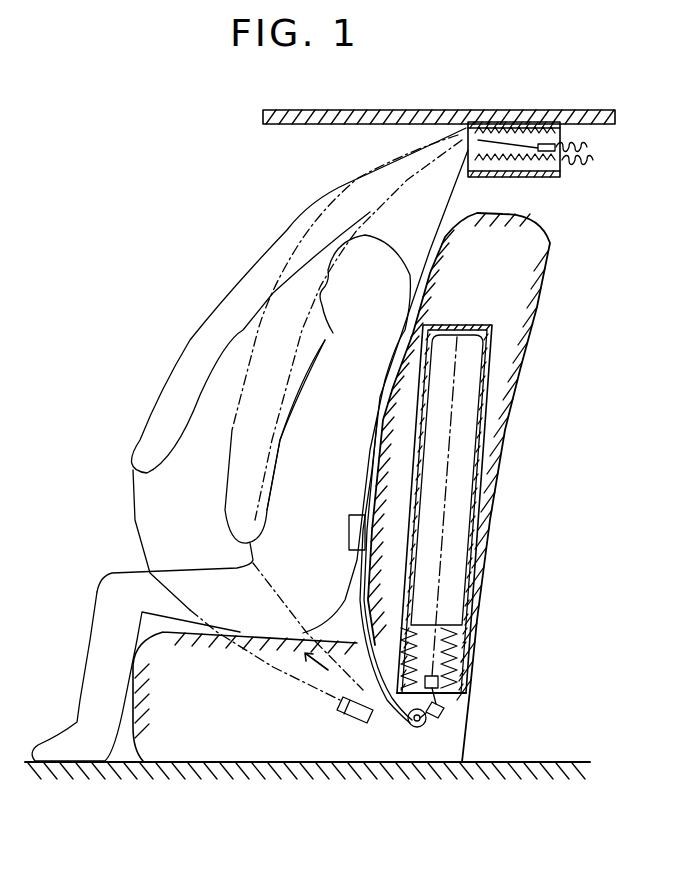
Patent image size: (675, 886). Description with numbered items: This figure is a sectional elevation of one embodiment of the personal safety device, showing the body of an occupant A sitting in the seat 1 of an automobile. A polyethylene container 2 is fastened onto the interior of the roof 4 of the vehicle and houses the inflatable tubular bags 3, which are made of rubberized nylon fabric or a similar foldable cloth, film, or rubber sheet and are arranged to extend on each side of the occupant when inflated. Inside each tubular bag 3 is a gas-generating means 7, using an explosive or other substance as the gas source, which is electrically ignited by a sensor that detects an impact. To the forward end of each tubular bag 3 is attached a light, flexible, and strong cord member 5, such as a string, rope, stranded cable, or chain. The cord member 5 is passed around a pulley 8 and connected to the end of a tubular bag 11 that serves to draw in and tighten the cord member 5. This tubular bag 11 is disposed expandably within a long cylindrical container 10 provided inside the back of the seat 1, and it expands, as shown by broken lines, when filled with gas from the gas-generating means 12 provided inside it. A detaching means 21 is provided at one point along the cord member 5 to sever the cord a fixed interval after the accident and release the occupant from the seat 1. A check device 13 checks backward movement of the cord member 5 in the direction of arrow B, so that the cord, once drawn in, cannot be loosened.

The seat 1 is at (538, 310).
The polyethylene container 2 is at (510, 177).
The inflatable tubular bags 3 is at (528, 110).
The roof 4 is at (370, 110).
The cord member 5 is at (432, 250).
The gas-generating means 7 is at (565, 143).
The pulley 8 is at (412, 733).
The long cylindrical container 10 is at (470, 590).
The tubular bag 11 is at (470, 375).
The gas-generating means 12 is at (440, 682).
The check device 13 is at (445, 712).
The detaching means 21 is at (349, 530).
The body of an occupant A is at (312, 450).
The arrow B direction B is at (318, 675).